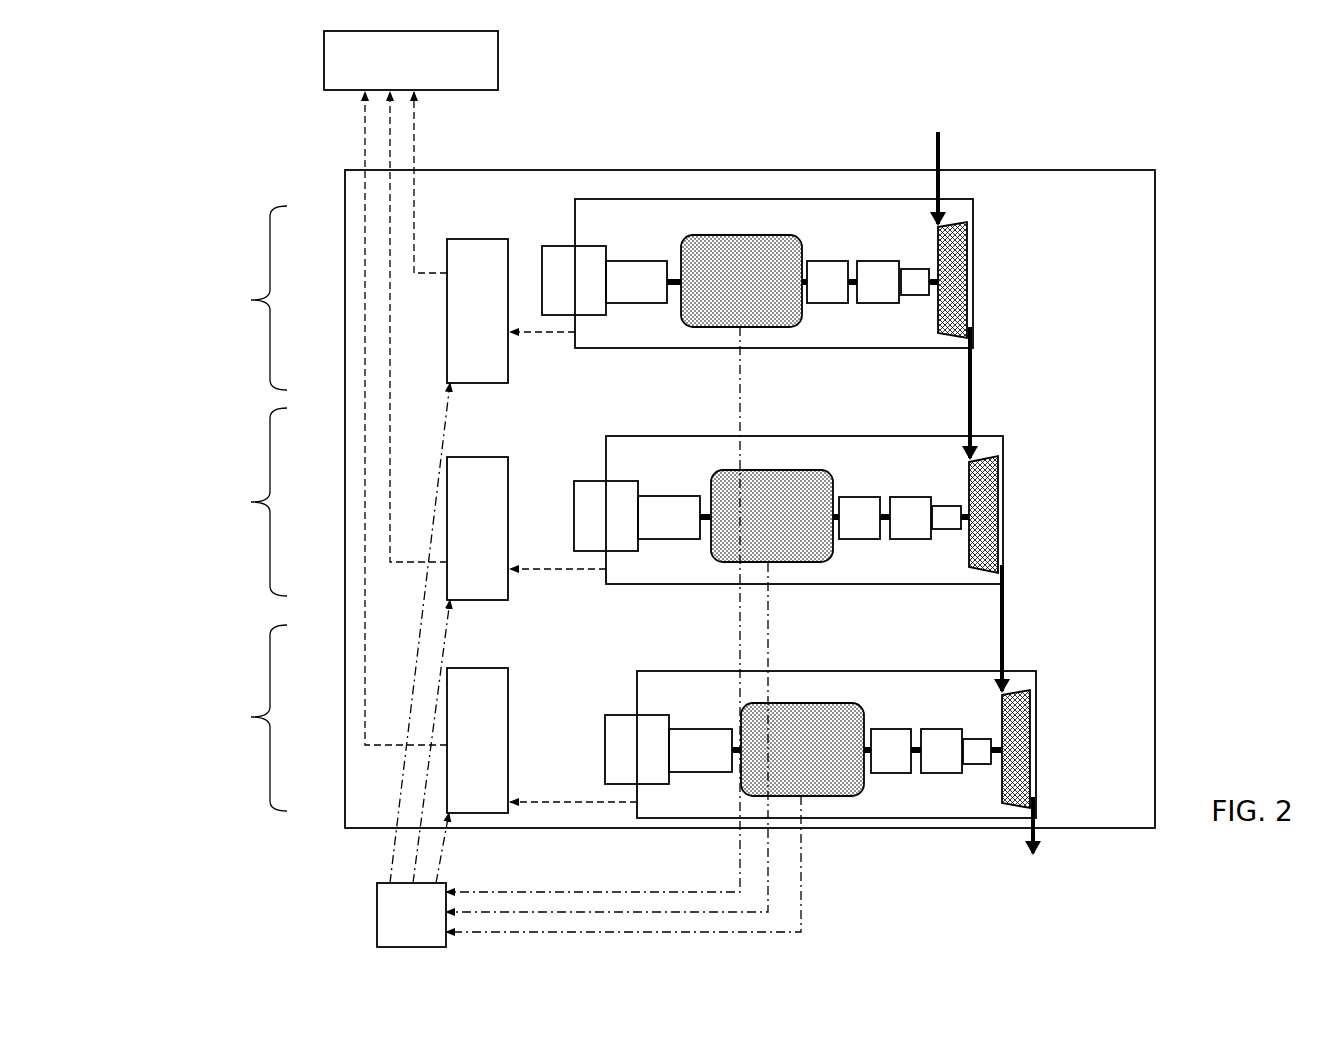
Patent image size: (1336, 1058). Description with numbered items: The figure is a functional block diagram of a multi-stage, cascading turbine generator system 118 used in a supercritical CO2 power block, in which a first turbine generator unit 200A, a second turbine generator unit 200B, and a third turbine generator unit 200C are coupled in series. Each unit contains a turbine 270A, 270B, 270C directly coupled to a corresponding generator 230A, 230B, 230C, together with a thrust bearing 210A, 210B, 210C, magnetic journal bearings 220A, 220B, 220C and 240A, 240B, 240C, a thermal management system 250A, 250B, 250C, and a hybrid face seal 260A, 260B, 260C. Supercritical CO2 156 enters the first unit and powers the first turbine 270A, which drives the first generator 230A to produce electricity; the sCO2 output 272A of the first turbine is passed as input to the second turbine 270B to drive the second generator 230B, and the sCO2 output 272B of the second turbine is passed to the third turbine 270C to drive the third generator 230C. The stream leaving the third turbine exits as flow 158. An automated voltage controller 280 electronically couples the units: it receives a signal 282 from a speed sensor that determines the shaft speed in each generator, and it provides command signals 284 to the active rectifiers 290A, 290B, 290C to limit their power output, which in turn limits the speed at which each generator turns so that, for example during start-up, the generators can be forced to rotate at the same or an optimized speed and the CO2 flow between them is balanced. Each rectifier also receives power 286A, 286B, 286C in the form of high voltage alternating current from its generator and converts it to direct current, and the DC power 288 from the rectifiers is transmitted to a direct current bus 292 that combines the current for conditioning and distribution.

The cascading turbine generator system 118 is at (1110, 170).
The supercritical CO2 156 is at (940, 166).
The output light 158 is at (1028, 844).
The first turbine generator unit 200A is at (232, 298).
The second turbine generator unit 200B is at (232, 502).
The third turbine generator unit 200C is at (232, 718).
The thrust bearing 210A is at (556, 246).
The thrust bearing 210B is at (583, 481).
The thrust bearing 210C is at (618, 715).
The magnetic journal bearing 220A is at (618, 261).
The magnetic journal bearing 220B is at (651, 495).
The magnetic journal bearing 220C is at (676, 729).
The first generator 230A is at (742, 235).
The second generator 230B is at (722, 468).
The third generator 230C is at (820, 703).
The magnetic journal bearing 240A is at (832, 259).
The magnetic journal bearing 240B is at (862, 495).
The magnetic journal bearing 240C is at (890, 728).
The thermal management system 250A is at (880, 259).
The thermal management system 250B is at (910, 495).
The thermal management system 250C is at (941, 728).
The hybrid face seal 260A is at (917, 268).
The hybrid face seal 260B is at (950, 505).
The hybrid face seal 260C is at (985, 738).
The first turbine 270A is at (968, 297).
The second turbine 270B is at (1000, 508).
The third turbine 270C is at (1032, 735).
The sCO2 output 272A is at (972, 390).
The sCO2 output 272B is at (1003, 628).
The automated voltage controller 280 is at (411, 915).
The signal 282 is at (740, 890).
The command signals 284 is at (440, 863).
The power 286A is at (533, 332).
The power 286B is at (565, 568).
The power 286C is at (583, 802).
The DC power 288 is at (414, 127).
The active rectifier 290A is at (477, 311).
The active rectifier 290B is at (477, 528).
The active rectifier 290C is at (477, 740).
The direct current bus 292 is at (411, 60).